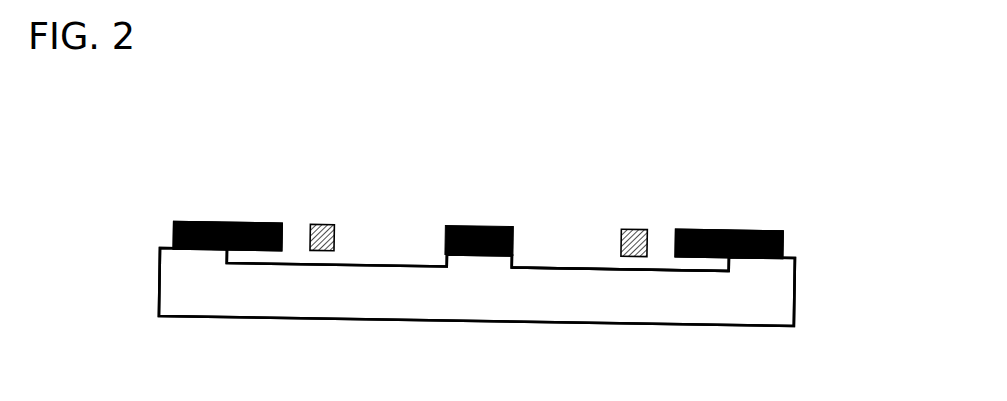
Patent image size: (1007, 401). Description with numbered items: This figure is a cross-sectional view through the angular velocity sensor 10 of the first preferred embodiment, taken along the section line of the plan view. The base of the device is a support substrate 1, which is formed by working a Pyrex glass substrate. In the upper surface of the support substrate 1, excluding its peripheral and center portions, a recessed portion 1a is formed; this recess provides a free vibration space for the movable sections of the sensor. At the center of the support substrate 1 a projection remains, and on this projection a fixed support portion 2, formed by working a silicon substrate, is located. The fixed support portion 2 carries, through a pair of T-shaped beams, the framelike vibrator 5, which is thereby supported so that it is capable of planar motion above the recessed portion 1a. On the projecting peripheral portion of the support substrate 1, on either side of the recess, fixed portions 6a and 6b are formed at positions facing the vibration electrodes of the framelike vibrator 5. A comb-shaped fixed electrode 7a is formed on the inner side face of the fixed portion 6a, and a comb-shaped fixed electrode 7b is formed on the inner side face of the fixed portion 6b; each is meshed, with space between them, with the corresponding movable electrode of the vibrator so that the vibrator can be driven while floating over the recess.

The electronic component device 10 is at (754, 167).
The support substrate 1 is at (772, 300).
The recessed portion 1a is at (625, 265).
The fixed support portion 2 is at (480, 223).
The framelike vibrator 5 is at (327, 223).
The fixed portion 6a is at (763, 231).
The fixed portion 6b is at (202, 221).
The comb-shaped fixed electrode 7a is at (703, 230).
The comb-shaped fixed electrode 7b is at (264, 221).